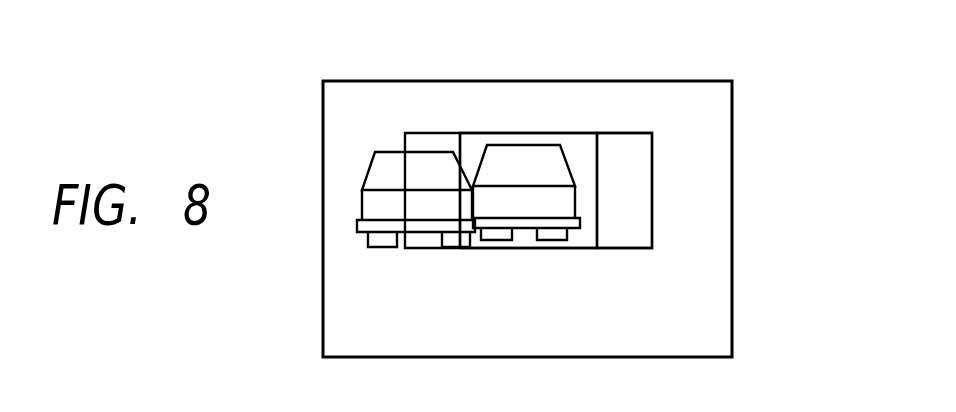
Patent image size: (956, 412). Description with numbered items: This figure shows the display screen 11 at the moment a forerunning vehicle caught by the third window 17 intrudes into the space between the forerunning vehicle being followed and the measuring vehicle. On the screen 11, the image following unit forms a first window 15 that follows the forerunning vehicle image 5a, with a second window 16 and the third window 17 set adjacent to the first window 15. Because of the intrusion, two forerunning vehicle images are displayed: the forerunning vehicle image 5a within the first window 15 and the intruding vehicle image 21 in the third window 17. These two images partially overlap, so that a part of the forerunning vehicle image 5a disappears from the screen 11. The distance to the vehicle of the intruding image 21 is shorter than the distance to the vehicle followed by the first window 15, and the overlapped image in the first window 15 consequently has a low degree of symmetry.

The display screen 11 is at (732, 146).
The third window 17 is at (443, 146).
The first window 15 is at (572, 145).
The second window 16 is at (635, 147).
The forerunning vehicle image 5a is at (512, 146).
The intruding vehicle image 21 is at (388, 148).